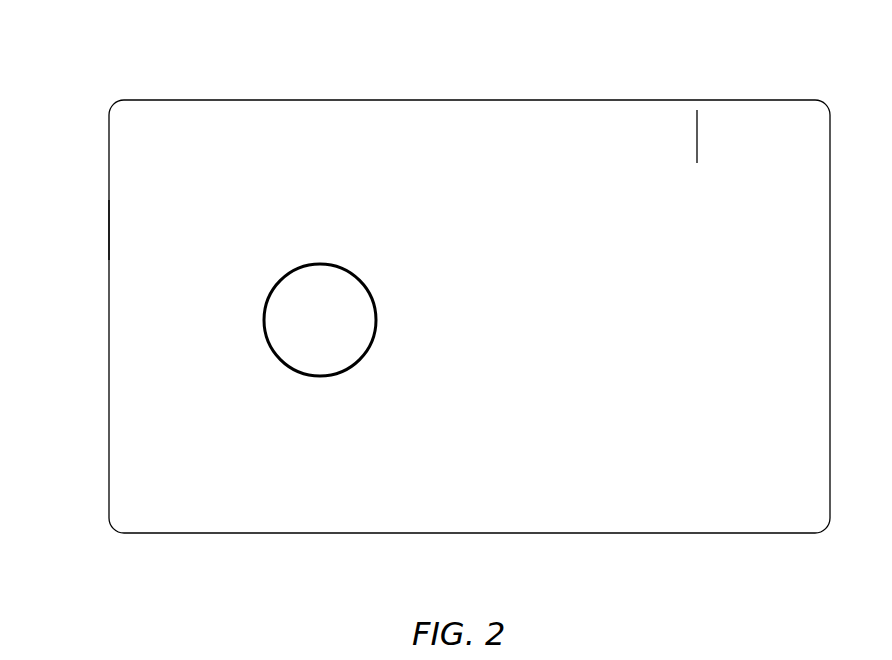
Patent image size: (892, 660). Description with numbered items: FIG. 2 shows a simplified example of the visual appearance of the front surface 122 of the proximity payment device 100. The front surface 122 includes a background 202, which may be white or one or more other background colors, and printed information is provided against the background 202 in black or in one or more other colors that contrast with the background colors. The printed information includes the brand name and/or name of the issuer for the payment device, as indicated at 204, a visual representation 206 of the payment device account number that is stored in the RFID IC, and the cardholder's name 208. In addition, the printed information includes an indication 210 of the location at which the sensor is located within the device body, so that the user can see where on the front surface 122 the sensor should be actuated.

The proximity payment device 100 is at (266, 78).
The front surface 122 is at (684, 178).
The background 202 is at (219, 219).
The brand name and/or name of the issuer 204 is at (486, 172).
The visual representation of the payment device account number 206 is at (218, 428).
The cardholder's name 208 is at (306, 504).
The indication of the location of the sensor 210 is at (396, 303).